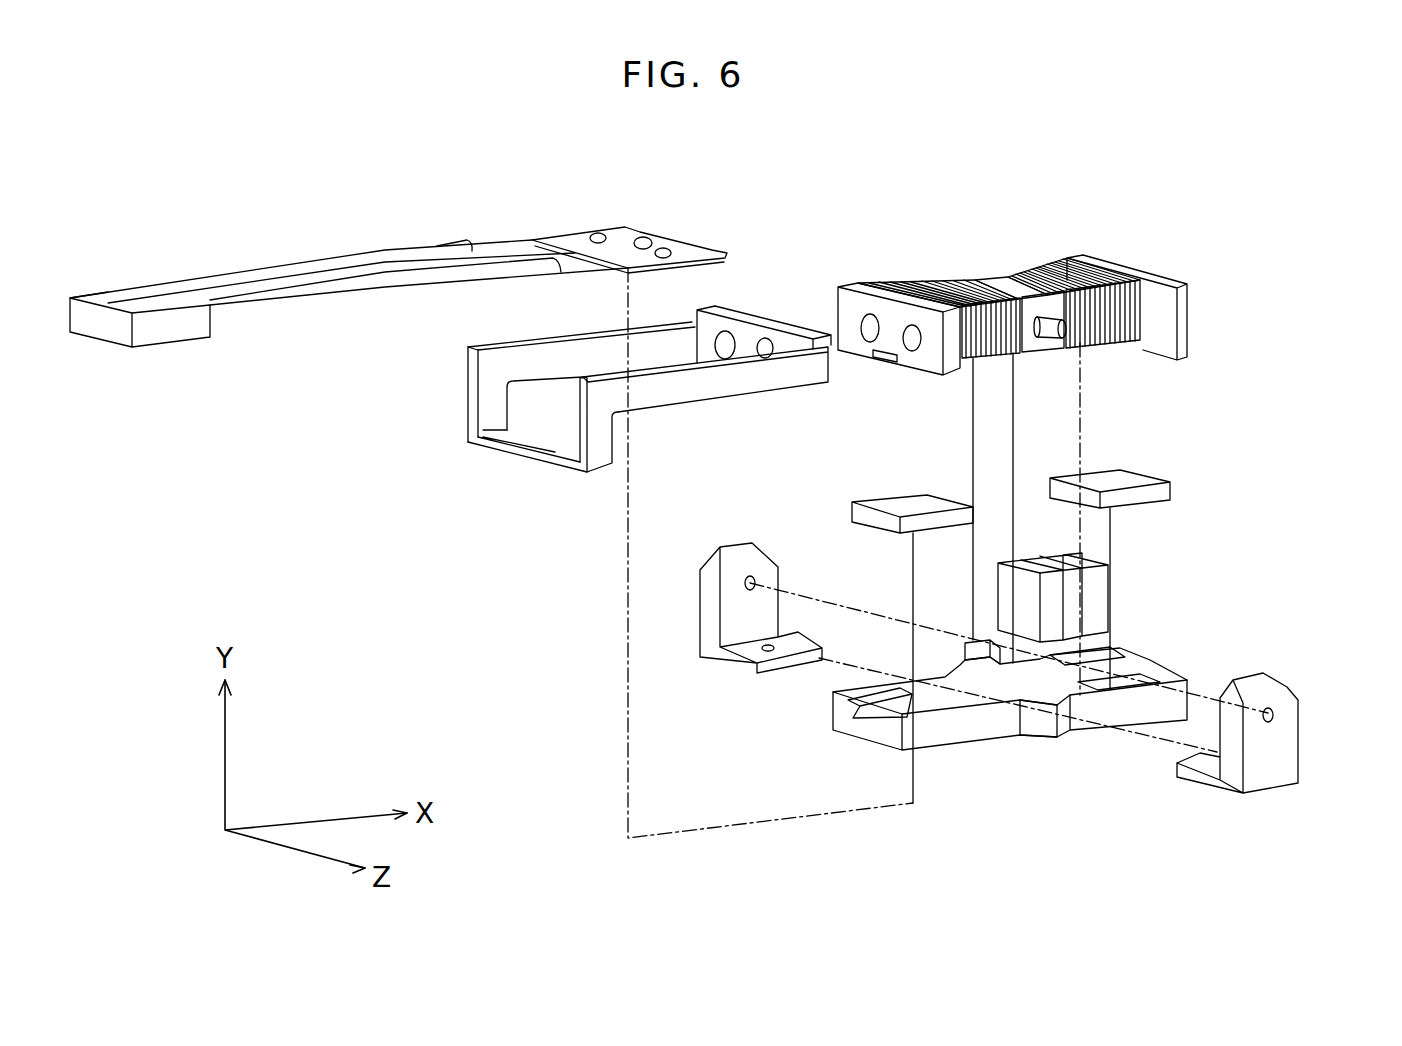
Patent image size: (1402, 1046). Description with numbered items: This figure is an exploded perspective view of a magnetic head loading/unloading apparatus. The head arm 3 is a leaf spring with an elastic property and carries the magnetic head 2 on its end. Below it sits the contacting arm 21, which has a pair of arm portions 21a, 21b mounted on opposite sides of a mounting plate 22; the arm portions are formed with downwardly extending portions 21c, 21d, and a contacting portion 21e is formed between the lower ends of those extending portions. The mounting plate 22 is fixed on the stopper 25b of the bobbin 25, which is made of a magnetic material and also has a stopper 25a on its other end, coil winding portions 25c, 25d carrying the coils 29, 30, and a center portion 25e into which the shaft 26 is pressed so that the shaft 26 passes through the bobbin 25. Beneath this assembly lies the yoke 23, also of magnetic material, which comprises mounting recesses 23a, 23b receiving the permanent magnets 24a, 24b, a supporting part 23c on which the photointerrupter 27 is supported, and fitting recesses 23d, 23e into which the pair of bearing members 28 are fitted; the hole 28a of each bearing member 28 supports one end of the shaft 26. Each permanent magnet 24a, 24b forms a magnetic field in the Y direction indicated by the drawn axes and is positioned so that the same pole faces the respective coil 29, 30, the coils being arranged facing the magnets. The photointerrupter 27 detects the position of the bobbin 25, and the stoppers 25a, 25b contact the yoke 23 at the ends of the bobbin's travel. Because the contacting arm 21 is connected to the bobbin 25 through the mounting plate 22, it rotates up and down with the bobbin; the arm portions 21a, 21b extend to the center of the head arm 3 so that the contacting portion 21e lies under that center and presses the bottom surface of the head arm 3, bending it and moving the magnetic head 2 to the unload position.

The magnetic head 2 is at (190, 333).
The head arm 3 is at (437, 262).
The contacting arm 21 is at (597, 417).
The arm portion 21a is at (713, 392).
The arm portion 21b is at (531, 357).
The downwardly extending portion 21c is at (598, 447).
The downwardly extending portion 21d is at (478, 390).
The contacting portion 21e is at (502, 452).
The mounting plate 22 is at (760, 317).
The yoke 23 is at (1036, 701).
The mounting recess 23a is at (1127, 677).
The mounting recess 23b is at (877, 718).
The supporting part 23c is at (1072, 663).
The fitting recess 23d is at (1057, 710).
The fitting recess 23e is at (965, 672).
The permanent magnet 24a is at (1147, 478).
The permanent magnet 24b is at (907, 500).
The bobbin 25 is at (1041, 259).
The stopper 25a is at (1180, 312).
The stopper 25b is at (855, 287).
The coil winding portion 25c is at (1048, 270).
The coil winding portion 25d is at (908, 295).
The center portion 25e is at (983, 273).
The shaft 26 is at (1076, 318).
The photointerrupter 27 is at (1112, 560).
The bearing member 28 is at (1019, 668).
The hole 28a is at (743, 587).
The coil 29 is at (953, 283).
The coil 30 is at (1066, 325).